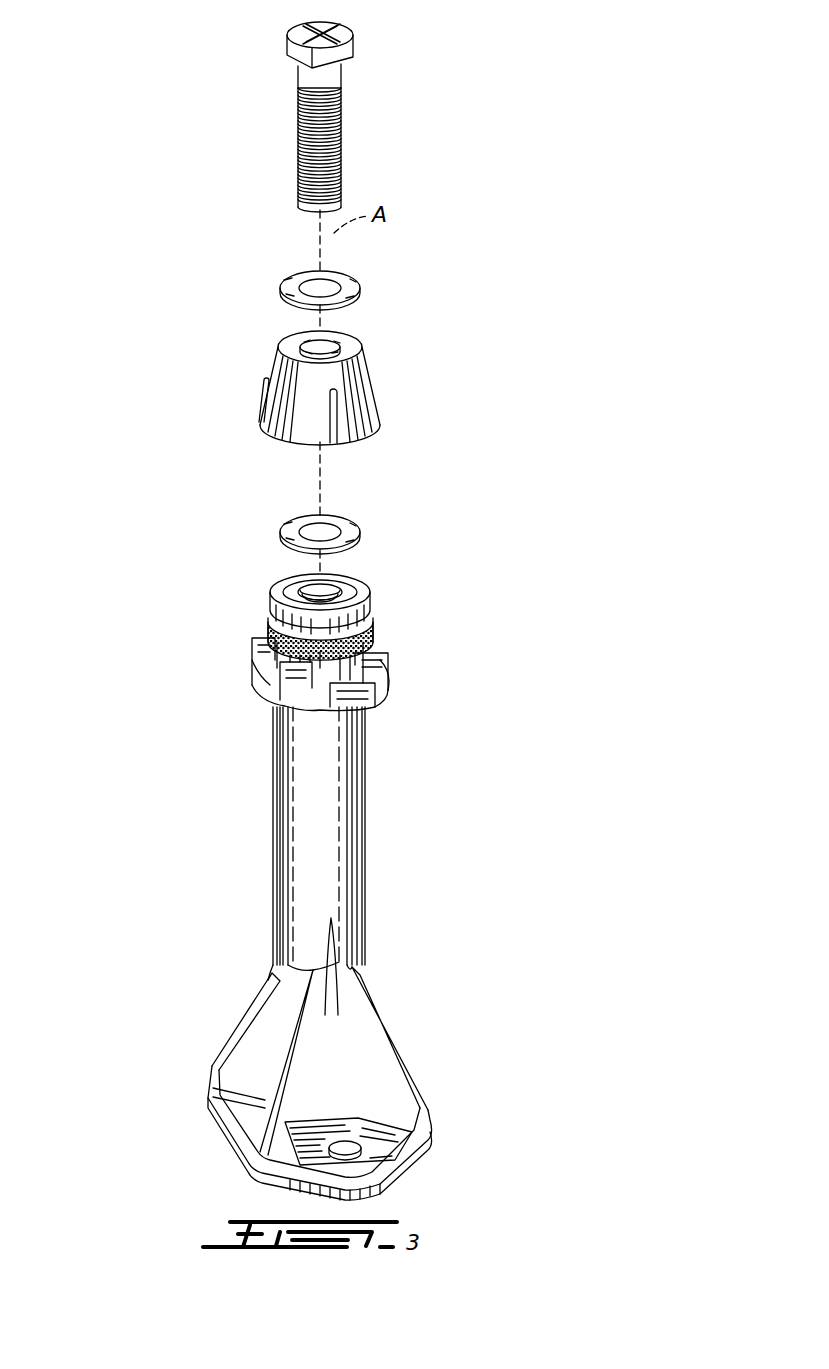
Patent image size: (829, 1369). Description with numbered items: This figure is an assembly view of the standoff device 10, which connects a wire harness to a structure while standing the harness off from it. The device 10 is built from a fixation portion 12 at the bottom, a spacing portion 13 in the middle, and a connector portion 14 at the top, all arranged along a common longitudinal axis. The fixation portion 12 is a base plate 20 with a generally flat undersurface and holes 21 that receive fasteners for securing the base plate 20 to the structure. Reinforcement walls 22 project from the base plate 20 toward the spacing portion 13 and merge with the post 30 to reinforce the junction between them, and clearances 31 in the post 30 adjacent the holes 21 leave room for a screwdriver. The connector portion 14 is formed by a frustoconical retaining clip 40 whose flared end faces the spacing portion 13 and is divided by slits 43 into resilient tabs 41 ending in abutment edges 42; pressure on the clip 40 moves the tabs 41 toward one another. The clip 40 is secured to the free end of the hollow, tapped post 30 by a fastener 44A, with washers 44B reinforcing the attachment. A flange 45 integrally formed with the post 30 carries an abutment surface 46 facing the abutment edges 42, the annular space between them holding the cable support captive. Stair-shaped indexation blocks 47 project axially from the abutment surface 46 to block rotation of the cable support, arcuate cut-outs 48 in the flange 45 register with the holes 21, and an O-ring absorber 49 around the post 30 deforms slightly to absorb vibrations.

The standoff device 10 is at (537, 225).
The fixation portion 12 is at (165, 1107).
The spacing portion 13 is at (182, 845).
The connector portion 14 is at (178, 473).
The base plate 20 is at (400, 1170).
The holes 21 is at (362, 1127).
The reinforcement walls 22 is at (278, 1057).
The post 30 is at (350, 830).
The clearances 31 is at (335, 1005).
The retaining clip 40 is at (405, 403).
The resilient tabs 41 is at (296, 420).
The abutment edges 42 is at (292, 447).
The slits 43 is at (262, 388).
The fastener 44A is at (337, 38).
The washers 44B is at (348, 287).
The flange 45 is at (380, 690).
The abutment surface 46 is at (263, 668).
The indexation blocks 47 is at (388, 658).
The cut-outs 48 is at (345, 705).
The absorber 49 is at (365, 628).